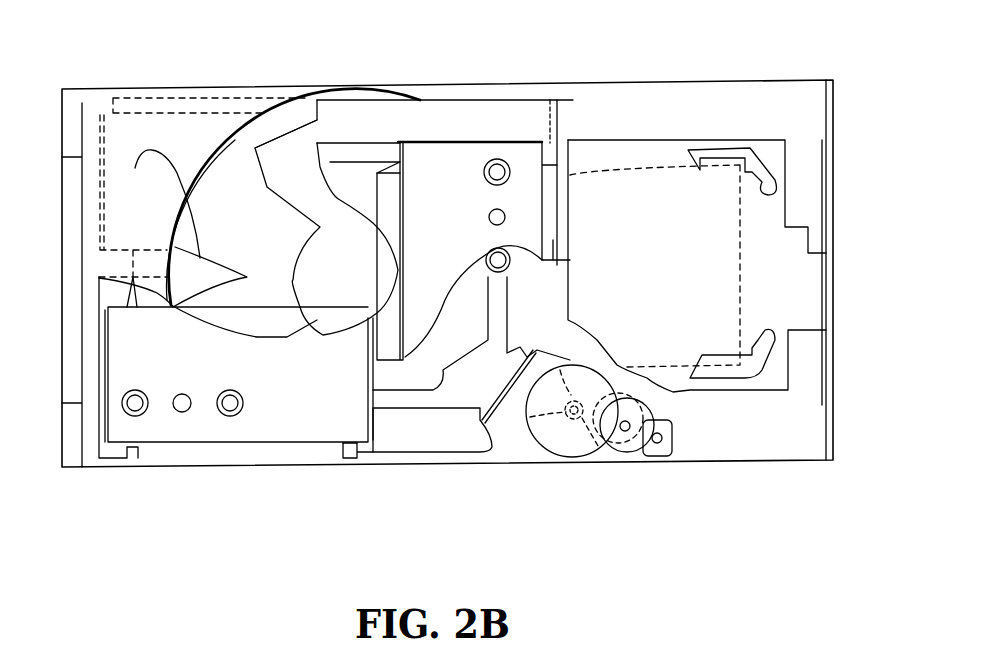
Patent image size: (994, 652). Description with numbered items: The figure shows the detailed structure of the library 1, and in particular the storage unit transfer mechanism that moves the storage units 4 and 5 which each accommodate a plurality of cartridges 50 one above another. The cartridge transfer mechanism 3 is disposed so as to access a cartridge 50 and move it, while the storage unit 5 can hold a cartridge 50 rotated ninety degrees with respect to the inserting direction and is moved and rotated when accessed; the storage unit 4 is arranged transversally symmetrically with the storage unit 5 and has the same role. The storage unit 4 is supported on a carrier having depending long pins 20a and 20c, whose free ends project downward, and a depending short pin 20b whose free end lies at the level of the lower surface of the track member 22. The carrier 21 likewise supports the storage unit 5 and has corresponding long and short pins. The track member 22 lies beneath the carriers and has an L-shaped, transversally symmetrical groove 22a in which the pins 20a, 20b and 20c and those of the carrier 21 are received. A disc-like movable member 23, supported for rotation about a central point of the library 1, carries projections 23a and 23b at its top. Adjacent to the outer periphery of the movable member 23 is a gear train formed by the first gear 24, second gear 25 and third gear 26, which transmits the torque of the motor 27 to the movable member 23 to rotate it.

The library 1 is at (757, 461).
The cartridge transfer mechanism 3 is at (680, 140).
The storage unit 4 is at (277, 407).
The storage unit 5 is at (430, 165).
The long pin 20a is at (220, 415).
The short pin 20b is at (178, 415).
The long pin 20c is at (147, 416).
The carrier 21 is at (448, 142).
The track member 22 is at (433, 433).
The groove 22a is at (407, 410).
The movable member 23 is at (237, 157).
The projection 23a is at (135, 168).
The projection 23b is at (290, 147).
The first gear 24 is at (627, 457).
The second gear 25 is at (567, 458).
The third gear 26 is at (513, 440).
The motor 27 is at (672, 440).
The cartridge 50 is at (560, 150).